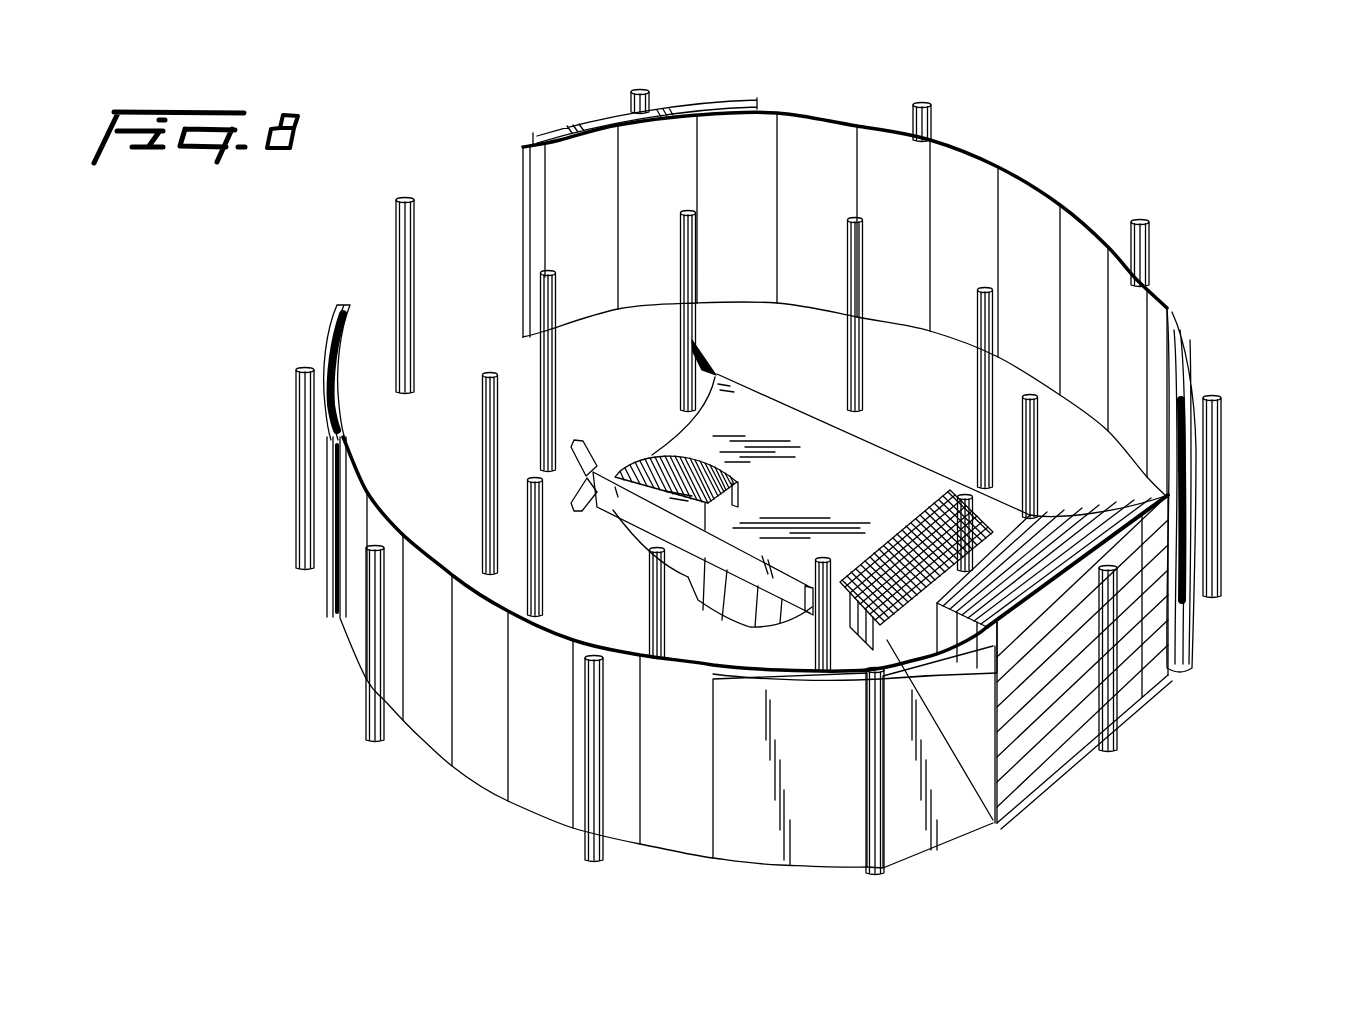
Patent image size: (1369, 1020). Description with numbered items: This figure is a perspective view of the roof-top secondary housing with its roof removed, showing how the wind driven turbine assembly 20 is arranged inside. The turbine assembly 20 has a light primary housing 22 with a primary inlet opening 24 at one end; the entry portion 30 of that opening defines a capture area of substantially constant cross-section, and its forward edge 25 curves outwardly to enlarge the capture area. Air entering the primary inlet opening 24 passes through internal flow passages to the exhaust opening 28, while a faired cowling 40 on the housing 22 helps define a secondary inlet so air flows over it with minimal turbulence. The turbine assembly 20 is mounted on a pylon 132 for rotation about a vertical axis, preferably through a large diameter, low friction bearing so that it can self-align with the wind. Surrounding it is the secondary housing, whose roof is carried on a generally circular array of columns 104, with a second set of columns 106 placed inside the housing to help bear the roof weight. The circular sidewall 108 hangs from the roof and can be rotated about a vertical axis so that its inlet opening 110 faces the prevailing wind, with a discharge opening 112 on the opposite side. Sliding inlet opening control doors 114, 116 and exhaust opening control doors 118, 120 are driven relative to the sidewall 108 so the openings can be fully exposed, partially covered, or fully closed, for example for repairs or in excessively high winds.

The wind driven turbine assembly 20 is at (878, 465).
The primary housing 22 is at (773, 417).
The primary inlet opening 24 is at (1040, 737).
The forward edge 25 is at (913, 663).
The exhaust opening 28 is at (677, 433).
The entry portion 30 is at (1022, 507).
The cowling 40 is at (648, 452).
The columns 104 is at (399, 246).
The second set of columns 106 is at (697, 275).
The sidewall 108 is at (458, 767).
The inlet opening 110 is at (1068, 773).
The discharge opening 112 is at (485, 218).
The inlet opening control door 114 is at (900, 840).
The inlet opening control door 116 is at (1192, 345).
The exhaust opening control door 118 is at (325, 350).
The exhaust opening control door 120 is at (563, 124).
The pylon 132 is at (713, 603).